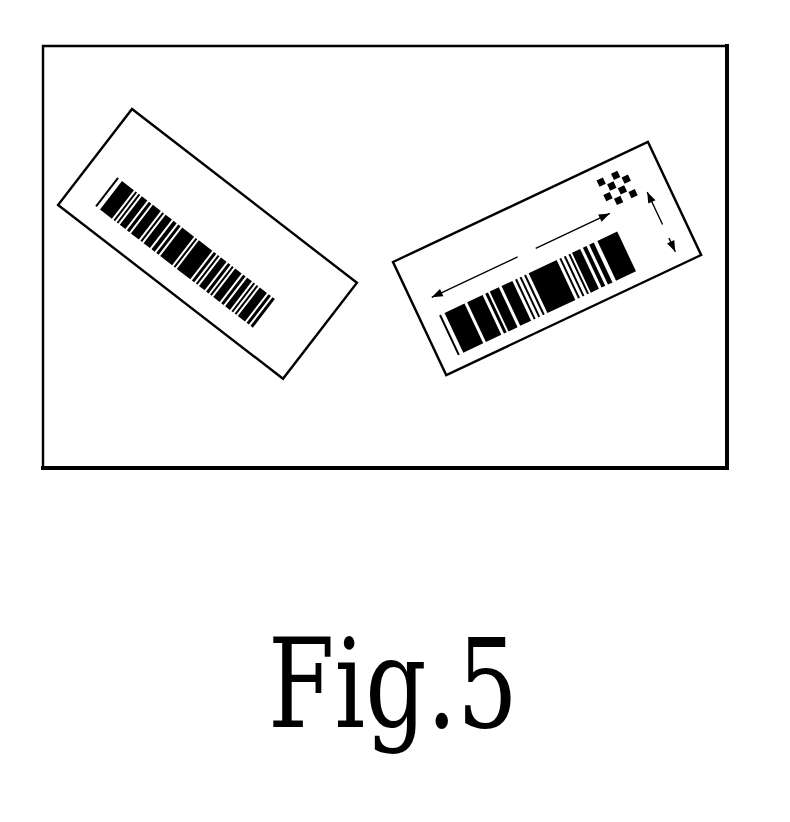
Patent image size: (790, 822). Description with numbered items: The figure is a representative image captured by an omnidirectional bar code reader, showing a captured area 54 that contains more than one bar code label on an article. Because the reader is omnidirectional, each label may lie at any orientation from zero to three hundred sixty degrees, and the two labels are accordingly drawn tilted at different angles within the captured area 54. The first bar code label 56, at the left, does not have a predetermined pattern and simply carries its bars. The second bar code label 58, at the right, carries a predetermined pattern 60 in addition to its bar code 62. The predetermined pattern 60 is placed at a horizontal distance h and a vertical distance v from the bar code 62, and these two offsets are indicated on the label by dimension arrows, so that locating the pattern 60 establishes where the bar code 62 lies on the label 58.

The captured area 54 is at (286, 79).
The bar code label 56 is at (272, 352).
The bar code label 58 is at (552, 202).
The predetermined pattern 60 is at (618, 173).
The bar code 62 is at (552, 307).